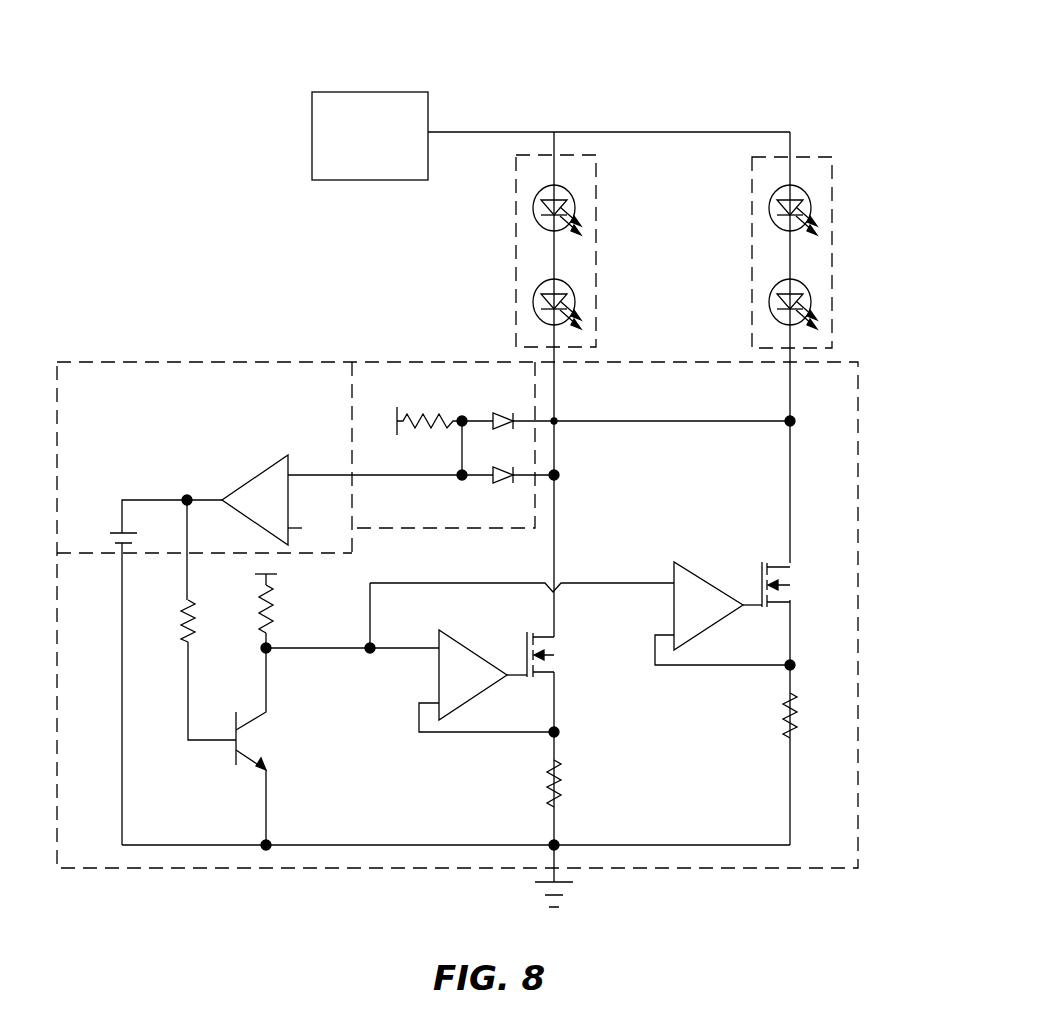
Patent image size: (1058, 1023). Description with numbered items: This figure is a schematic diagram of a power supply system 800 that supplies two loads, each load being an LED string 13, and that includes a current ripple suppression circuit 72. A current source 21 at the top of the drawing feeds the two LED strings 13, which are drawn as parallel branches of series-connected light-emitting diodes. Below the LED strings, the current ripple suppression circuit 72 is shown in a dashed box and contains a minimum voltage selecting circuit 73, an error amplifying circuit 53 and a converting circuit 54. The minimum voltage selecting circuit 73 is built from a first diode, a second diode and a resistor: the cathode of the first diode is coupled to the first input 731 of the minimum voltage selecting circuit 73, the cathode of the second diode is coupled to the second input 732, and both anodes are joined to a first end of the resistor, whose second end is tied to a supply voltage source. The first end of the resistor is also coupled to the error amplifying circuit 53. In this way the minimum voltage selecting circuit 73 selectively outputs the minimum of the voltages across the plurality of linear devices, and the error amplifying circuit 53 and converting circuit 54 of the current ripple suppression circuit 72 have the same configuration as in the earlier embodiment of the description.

The power supply system 800 is at (770, 42).
The current source 21 is at (338, 181).
The LED string 13 is at (596, 192).
The current ripple suppression circuit 72 is at (858, 605).
The minimum voltage selecting circuit 73 is at (541, 457).
The first input 731 is at (557, 418).
The second input 732 is at (557, 478).
The error amplifying circuit 53 is at (204, 613).
The converting circuit 54 is at (258, 675).